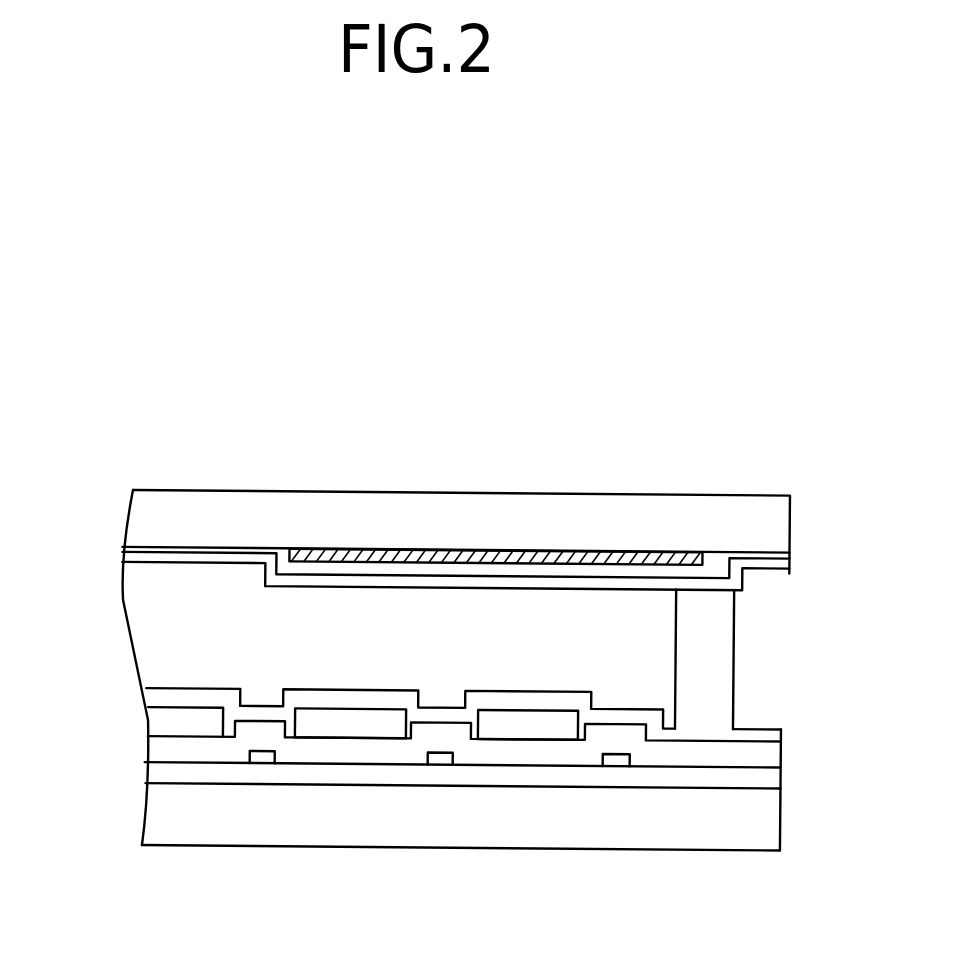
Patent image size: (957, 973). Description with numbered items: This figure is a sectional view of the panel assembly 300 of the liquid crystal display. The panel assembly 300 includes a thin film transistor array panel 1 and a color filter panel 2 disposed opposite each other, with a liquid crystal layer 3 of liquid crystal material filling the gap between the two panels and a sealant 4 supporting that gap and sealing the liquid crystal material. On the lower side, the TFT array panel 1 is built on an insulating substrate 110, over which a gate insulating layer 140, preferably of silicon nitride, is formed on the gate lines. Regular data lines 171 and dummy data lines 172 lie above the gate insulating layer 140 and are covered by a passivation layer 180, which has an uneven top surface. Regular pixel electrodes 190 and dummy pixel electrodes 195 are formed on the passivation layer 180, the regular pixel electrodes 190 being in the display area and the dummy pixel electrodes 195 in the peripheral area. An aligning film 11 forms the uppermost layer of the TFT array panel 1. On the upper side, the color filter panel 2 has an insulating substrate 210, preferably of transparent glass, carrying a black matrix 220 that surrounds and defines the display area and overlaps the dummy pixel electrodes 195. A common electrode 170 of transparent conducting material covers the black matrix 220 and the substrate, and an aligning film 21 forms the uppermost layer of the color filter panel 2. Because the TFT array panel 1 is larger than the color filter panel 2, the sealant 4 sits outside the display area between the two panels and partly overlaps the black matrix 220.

The panel assembly 300 is at (805, 592).
The thin film transistor array panel 1 is at (452, 846).
The color filter panel 2 is at (342, 492).
The liquid crystal layer 3 is at (150, 612).
The sealant 4 is at (713, 675).
The aligning film 11 is at (150, 697).
The aligning film 21 is at (194, 551).
The insulating substrate 110 is at (744, 842).
The gate insulating layer 140 is at (775, 768).
The common electrode 170 is at (238, 550).
The regular data line 171 is at (266, 756).
The dummy data line 172 is at (443, 756).
The passivation layer 180 is at (778, 744).
The regular pixel electrode 190 is at (189, 720).
The dummy pixel electrode 195 is at (347, 727).
The insulating substrate 210 is at (715, 505).
The black matrix 220 is at (483, 547).